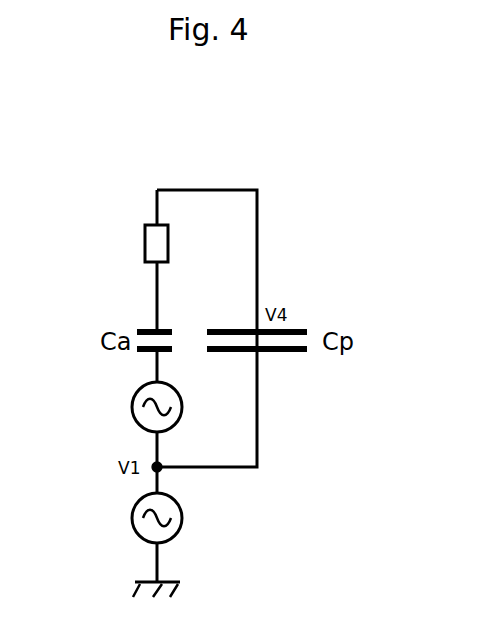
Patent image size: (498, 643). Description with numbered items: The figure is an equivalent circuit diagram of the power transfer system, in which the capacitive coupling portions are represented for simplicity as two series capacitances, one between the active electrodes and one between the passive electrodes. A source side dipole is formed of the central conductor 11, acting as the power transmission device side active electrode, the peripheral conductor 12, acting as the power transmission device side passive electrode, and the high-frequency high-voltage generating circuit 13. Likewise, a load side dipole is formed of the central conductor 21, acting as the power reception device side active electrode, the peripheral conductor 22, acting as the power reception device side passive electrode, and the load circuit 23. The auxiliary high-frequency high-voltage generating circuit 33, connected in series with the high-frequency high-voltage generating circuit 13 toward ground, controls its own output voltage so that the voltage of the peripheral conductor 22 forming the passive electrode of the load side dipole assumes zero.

The load circuit 23 is at (145, 241).
The central conductor 21 is at (170, 329).
The central conductor 11 is at (170, 352).
The peripheral conductor 22 is at (290, 329).
The peripheral conductor 12 is at (290, 352).
The high-frequency high-voltage generating circuit 13 is at (131, 400).
The auxiliary high-frequency high-voltage generating circuit 33 is at (131, 511).